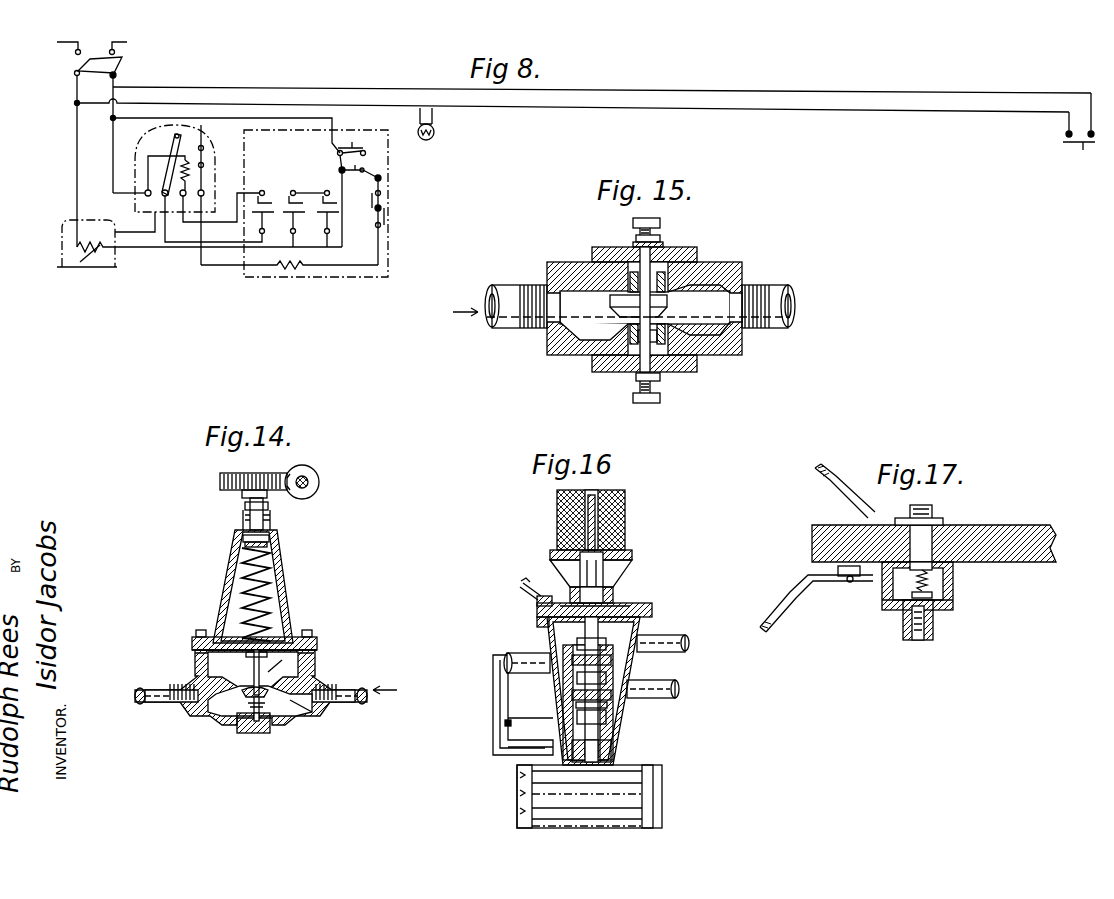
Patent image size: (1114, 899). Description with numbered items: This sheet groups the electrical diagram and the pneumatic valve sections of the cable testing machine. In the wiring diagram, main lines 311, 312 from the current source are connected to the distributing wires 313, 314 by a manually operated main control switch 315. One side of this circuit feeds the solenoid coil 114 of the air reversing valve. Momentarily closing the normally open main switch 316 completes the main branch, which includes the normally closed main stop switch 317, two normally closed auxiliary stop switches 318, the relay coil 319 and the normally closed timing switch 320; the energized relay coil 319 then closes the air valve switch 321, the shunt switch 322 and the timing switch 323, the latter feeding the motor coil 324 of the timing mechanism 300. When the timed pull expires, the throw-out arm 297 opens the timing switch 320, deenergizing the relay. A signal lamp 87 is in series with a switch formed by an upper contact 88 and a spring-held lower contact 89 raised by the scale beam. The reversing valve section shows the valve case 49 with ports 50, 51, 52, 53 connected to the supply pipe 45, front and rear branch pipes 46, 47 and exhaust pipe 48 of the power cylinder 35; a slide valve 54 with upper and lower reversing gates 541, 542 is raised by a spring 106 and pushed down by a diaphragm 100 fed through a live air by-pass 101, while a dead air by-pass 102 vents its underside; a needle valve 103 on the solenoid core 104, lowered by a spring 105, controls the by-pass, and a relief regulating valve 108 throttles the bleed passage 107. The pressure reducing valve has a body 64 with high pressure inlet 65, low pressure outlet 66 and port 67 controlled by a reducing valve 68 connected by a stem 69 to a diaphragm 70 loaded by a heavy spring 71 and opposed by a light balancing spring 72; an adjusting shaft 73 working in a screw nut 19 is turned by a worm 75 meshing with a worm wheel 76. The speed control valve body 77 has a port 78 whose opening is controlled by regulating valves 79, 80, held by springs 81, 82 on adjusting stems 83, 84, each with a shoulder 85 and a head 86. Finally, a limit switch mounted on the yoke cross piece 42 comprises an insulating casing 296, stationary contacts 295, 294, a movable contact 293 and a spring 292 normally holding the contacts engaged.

In FIG. 8, the main line 311 is at (55, 44).
In FIG. 8, the main line 312 is at (138, 46).
In FIG. 8, the main distributing wire 313 is at (77, 85).
In FIG. 8, the main distributing wire 314 is at (118, 76).
In FIG. 8, the main control switch 315 is at (88, 61).
In FIG. 8, the throw-out arm 297 is at (165, 148).
In FIG. 8, the timing mechanism 300 is at (176, 146).
In FIG. 8, the timing switch 320 is at (205, 152).
In FIG. 8, the motor coil 324 is at (188, 176).
In FIG. 8, the timing switch 323 is at (256, 190).
In FIG. 8, the shunt switch 322 is at (324, 190).
In FIG. 8, the air valve switch 321 is at (288, 182).
In FIG. 8, the main switch 316 is at (363, 144).
In FIG. 8, the main stop switch 317 is at (358, 173).
In FIG. 8, the auxiliary stop switch 318 is at (383, 178).
In FIG. 17, the auxiliary stop switch 318 is at (936, 586).
In FIG. 8, the relay coil 319 is at (289, 258).
In FIG. 8, the solenoid coil 114 is at (95, 252).
In FIG. 16, the solenoid coil 114 is at (620, 507).
In FIG. 8, the electric signal lamp 87 is at (442, 124).
In FIG. 8, the upper contact 88 is at (1080, 115).
In FIG. 8, the lower contact 89 is at (1079, 158).
In FIG. 15, the rear branch pipe 47 is at (790, 306).
In FIG. 16, the rear branch pipe 47 is at (508, 722).
In FIG. 15, the speed control valve body 77 is at (735, 352).
In FIG. 15, the port 78 is at (615, 302).
In FIG. 15, the regulating valve 79 is at (600, 325).
In FIG. 15, the regulating valve 80 is at (688, 292).
In FIG. 15, the spring 81 is at (660, 340).
In FIG. 15, the spring 82 is at (632, 268).
In FIG. 15, the adjusting stem 83 is at (632, 346).
In FIG. 15, the adjusting stem 84 is at (662, 243).
In FIG. 15, the shoulder 85 is at (672, 350).
In FIG. 15, the head 86 is at (662, 406).
In FIG. 14, the screw nut 19 is at (268, 548).
In FIG. 14, the supply pipe 45 is at (370, 712).
In FIG. 16, the supply pipe 45 is at (680, 684).
In FIG. 14, the pressure reducing valve body 64 is at (227, 568).
In FIG. 14, the high pressure inlet 65 is at (304, 700).
In FIG. 14, the low pressure outlet 66 is at (205, 672).
In FIG. 14, the port 67 is at (270, 672).
In FIG. 14, the reducing valve 68 is at (250, 700).
In FIG. 14, the stem 69 is at (254, 668).
In FIG. 14, the diaphragm 70 is at (294, 630).
In FIG. 14, the heavy spring 71 is at (272, 588).
In FIG. 14, the light balancing spring 72 is at (272, 728).
In FIG. 14, the adjusting shaft 73 is at (245, 505).
In FIG. 14, the worm 75 is at (319, 480).
In FIG. 14, the worm wheel 76 is at (262, 474).
In FIG. 16, the power cylinder 35 is at (520, 795).
In FIG. 16, the front branch pipe 46 is at (507, 662).
In FIG. 16, the exhaust pipe 48 is at (689, 640).
In FIG. 16, the valve case 49 is at (537, 598).
In FIG. 16, the port 50 is at (606, 678).
In FIG. 16, the port 51 is at (611, 696).
In FIG. 16, the port 52 is at (585, 650).
In FIG. 16, the port 53 is at (606, 720).
In FIG. 16, the slide valve 54 is at (606, 640).
In FIG. 16, the diaphragm 100 is at (550, 632).
In FIG. 16, the live air by-pass 101 is at (650, 612).
In FIG. 16, the dead air by-pass 102 is at (565, 690).
In FIG. 16, the needle valve 103 is at (615, 592).
In FIG. 16, the solenoid core 104 is at (628, 540).
In FIG. 16, the spring 105 is at (600, 492).
In FIG. 16, the spring 106 is at (611, 745).
In FIG. 16, the bleed passage 107 is at (537, 617).
In FIG. 16, the relief regulating valve 108 is at (540, 590).
In FIG. 16, the upper reversing gate 541 is at (611, 660).
In FIG. 16, the lower reversing gate 542 is at (576, 705).
In FIG. 17, the yoke cross piece 42 is at (1010, 535).
In FIG. 17, the spring 292 is at (940, 575).
In FIG. 17, the movable contact 293 is at (918, 642).
In FIG. 17, the stationary contact 294 is at (935, 605).
In FIG. 17, the stationary contact 295 is at (882, 598).
In FIG. 17, the insulating casing 296 is at (890, 610).